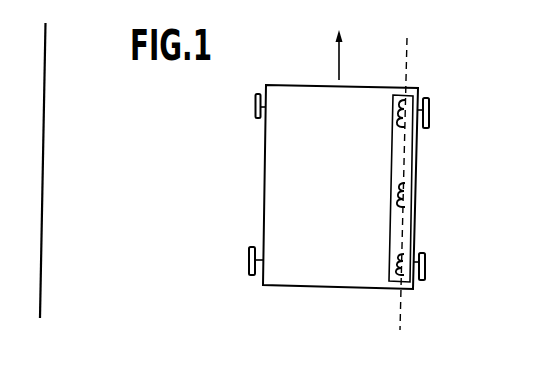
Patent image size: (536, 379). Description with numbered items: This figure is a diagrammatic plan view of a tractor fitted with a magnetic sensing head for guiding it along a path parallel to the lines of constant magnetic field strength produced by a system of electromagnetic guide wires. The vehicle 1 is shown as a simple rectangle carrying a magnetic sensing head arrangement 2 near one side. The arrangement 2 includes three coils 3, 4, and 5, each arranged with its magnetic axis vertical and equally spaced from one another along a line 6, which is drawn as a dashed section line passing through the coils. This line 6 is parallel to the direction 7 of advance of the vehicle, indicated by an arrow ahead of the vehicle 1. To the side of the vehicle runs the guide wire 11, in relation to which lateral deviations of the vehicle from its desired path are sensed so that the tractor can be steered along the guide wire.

The vehicle 1 is at (265, 161).
The magnetic sensing head arrangement 2 is at (392, 150).
The coil 3 is at (397, 110).
The coil 4 is at (397, 198).
The coil 5 is at (397, 260).
The line 6 is at (404, 42).
The direction of advance 7 is at (336, 58).
The guide wire 11 is at (46, 126).